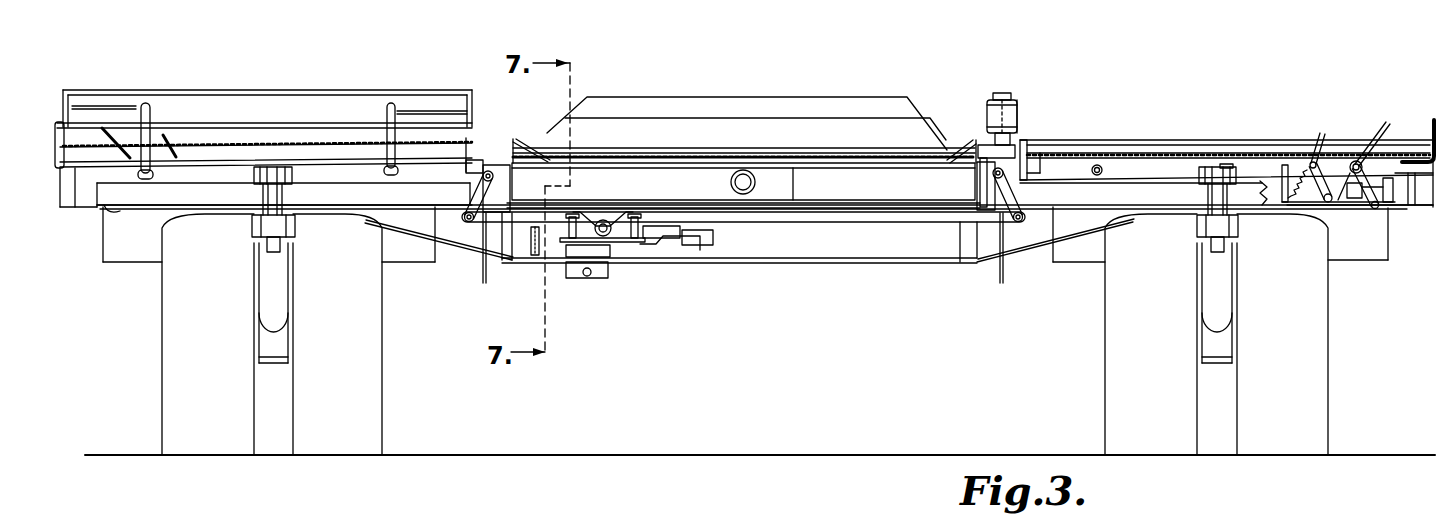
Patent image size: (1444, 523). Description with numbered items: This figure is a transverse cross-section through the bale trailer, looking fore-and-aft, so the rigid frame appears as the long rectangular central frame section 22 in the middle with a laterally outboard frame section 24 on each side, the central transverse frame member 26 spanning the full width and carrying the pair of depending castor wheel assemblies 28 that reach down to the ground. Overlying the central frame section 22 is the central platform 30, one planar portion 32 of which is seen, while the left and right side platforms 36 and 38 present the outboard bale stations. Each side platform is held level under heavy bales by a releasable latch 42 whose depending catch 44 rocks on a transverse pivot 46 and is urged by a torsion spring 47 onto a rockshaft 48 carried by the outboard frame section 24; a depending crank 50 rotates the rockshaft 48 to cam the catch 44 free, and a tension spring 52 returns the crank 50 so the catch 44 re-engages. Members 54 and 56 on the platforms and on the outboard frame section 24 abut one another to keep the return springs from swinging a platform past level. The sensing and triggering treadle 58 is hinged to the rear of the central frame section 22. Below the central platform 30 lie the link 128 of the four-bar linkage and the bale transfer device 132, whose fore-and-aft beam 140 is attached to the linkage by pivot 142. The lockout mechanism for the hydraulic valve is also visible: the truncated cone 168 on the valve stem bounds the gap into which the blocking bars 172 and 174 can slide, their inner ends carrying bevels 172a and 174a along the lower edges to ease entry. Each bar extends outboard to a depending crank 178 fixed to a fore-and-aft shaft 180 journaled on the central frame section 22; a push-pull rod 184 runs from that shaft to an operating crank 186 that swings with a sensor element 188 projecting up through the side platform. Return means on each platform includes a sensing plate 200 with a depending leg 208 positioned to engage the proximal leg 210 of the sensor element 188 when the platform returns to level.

The central frame section 22 is at (906, 222).
The laterally outboard frame section 24 is at (127, 217).
The central transverse frame member 26 is at (476, 165).
The castor wheel assembly 28 is at (158, 362).
The central platform 30 is at (711, 140).
The planar portion 32 is at (803, 163).
The left side platform 36 is at (1164, 133).
The right side platform 38 is at (290, 138).
The releasable latch 42 is at (254, 244).
The catch 44 is at (1238, 240).
The pivot 46 is at (1200, 164).
The torsion spring 47 is at (1229, 163).
The rockshaft 48 is at (421, 214).
The crank 50 is at (483, 285).
The tension spring 52 is at (477, 251).
The abutment member 54 is at (345, 170).
The abutment member 56 is at (357, 196).
The sensing and triggering treadle 58 is at (796, 86).
The link 128 is at (985, 150).
The bale transfer device 132 is at (1023, 80).
The beam 140 is at (991, 110).
The pivot 142 is at (1002, 93).
The truncated cone 168 is at (620, 241).
The blocking bar 172 is at (838, 222).
The bevel 172a is at (626, 216).
The blocking bar 174 is at (503, 233).
The bevel 174a is at (588, 216).
The crank 178 is at (470, 193).
The shaft 180 is at (492, 174).
The push-pull rod 184 is at (1332, 205).
The operating crank 186 is at (1386, 206).
The sensor element 188 is at (1390, 120).
The sensing plate 200 is at (1318, 132).
The leg 208 is at (1312, 199).
The leg 210 is at (1358, 201).